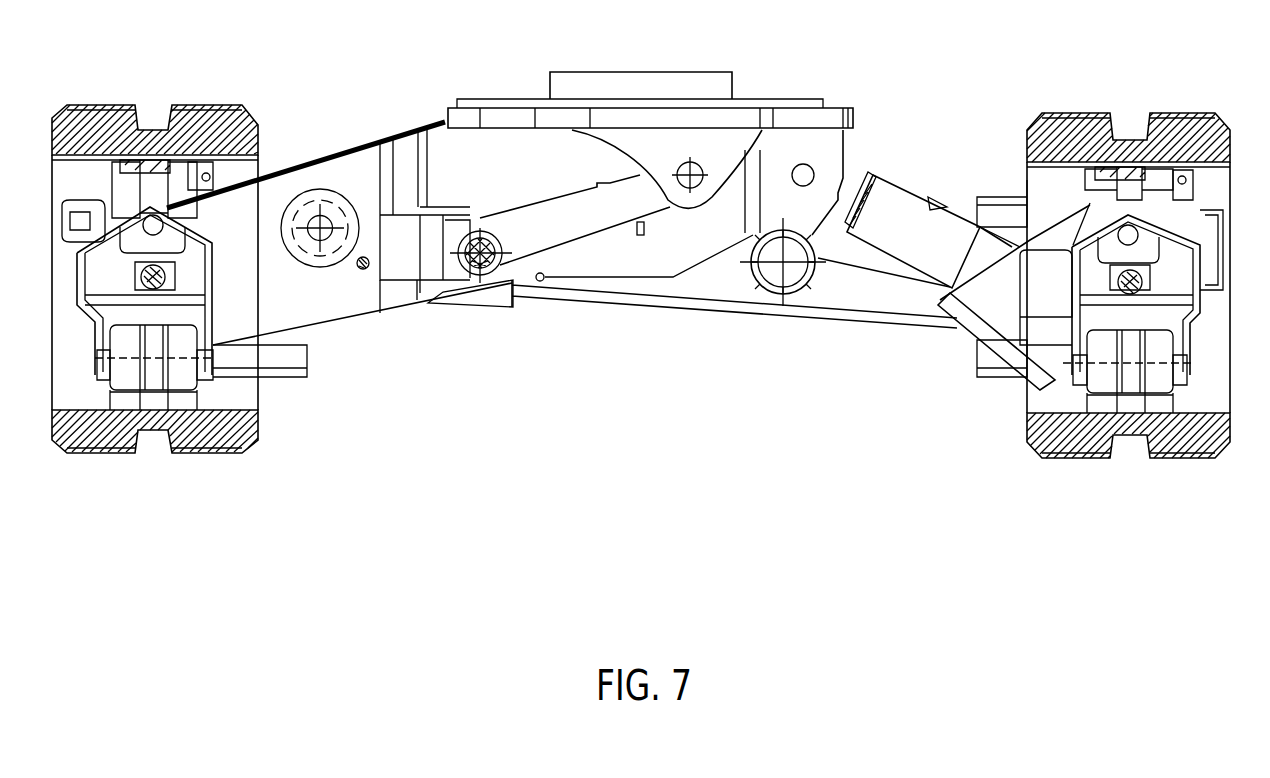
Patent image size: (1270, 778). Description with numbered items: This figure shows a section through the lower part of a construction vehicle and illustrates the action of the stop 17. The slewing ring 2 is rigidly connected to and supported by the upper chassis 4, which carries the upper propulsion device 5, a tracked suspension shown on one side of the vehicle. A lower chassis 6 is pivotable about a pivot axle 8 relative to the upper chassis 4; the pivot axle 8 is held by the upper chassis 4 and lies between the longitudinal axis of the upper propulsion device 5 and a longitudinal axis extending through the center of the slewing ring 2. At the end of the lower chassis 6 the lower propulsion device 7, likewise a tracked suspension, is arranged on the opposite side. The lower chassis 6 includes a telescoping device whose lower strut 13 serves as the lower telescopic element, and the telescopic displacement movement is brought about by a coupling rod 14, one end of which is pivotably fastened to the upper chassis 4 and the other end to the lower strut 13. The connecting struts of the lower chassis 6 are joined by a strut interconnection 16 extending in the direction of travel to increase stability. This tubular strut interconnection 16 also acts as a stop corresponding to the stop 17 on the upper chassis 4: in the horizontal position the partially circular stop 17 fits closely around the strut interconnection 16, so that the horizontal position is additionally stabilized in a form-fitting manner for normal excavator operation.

The slewing ring 2 is at (699, 82).
The upper chassis 4 is at (352, 298).
The upper propulsion device 5 is at (106, 128).
The lower chassis 6 is at (893, 290).
The lower propulsion device 7 is at (1068, 128).
The pivot axle 8 is at (316, 207).
The lower strut 13 is at (713, 283).
The coupling rod 14 is at (563, 225).
The strut interconnection 16 is at (797, 290).
The stop 17 is at (843, 222).